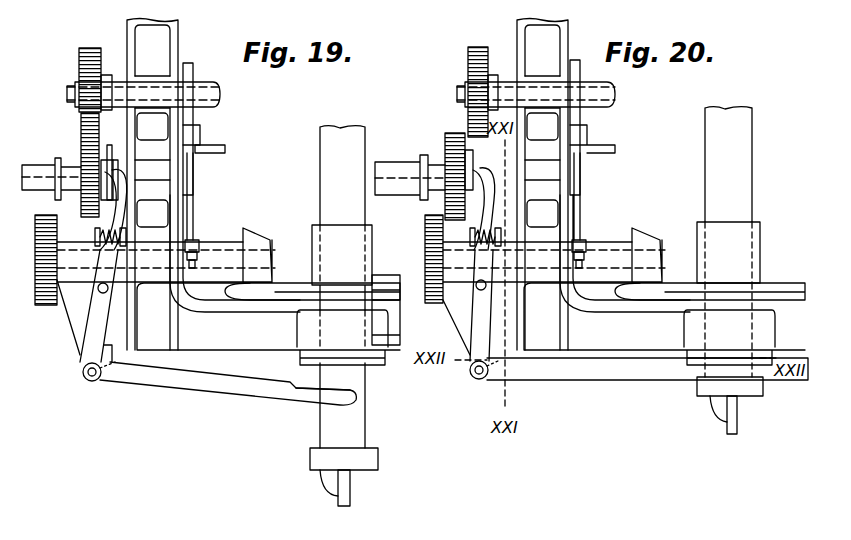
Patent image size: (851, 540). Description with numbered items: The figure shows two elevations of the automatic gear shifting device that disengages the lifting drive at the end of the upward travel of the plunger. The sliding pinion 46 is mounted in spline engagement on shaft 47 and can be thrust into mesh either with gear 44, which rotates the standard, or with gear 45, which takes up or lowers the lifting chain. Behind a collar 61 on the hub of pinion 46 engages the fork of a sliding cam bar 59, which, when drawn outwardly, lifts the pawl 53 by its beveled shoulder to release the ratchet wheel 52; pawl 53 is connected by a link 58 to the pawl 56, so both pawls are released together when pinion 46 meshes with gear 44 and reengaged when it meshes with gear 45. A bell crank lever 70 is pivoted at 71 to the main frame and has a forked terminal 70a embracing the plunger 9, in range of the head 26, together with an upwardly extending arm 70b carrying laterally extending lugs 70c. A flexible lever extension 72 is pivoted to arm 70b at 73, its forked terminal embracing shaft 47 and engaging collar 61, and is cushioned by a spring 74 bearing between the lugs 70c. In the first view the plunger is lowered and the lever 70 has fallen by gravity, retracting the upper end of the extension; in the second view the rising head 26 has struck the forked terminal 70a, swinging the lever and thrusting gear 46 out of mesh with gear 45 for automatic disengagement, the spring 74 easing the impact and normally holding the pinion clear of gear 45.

In FIG. 19, the plunger 9 is at (332, 172).
In FIG. 20, the plunger 9 is at (735, 200).
In FIG. 19, the head 26 is at (368, 457).
In FIG. 20, the head 26 is at (708, 386).
In FIG. 19, the gear 44 is at (150, 285).
In FIG. 20, the gear 44 is at (426, 237).
In FIG. 19, the gear 45 is at (88, 48).
In FIG. 20, the gear 45 is at (480, 47).
In FIG. 19, the shifting gear 46 is at (84, 152).
In FIG. 20, the shifting gear 46 is at (456, 134).
In FIG. 19, the shaft 47 is at (42, 178).
In FIG. 20, the shaft 47 is at (398, 176).
In FIG. 19, the ratchet wheel 52 is at (188, 63).
In FIG. 20, the ratchet wheel 52 is at (578, 60).
In FIG. 19, the pawl 53 is at (195, 140).
In FIG. 20, the pawl 53 is at (582, 139).
In FIG. 19, the pawl 56 is at (197, 245).
In FIG. 19, the link 58 is at (195, 186).
In FIG. 19, the sliding cam bar 59 is at (226, 149).
In FIG. 19, the collar 61 is at (116, 160).
In FIG. 19, the bell crank lever 70 is at (205, 384).
In FIG. 20, the bell crank lever 70 is at (622, 372).
In FIG. 19, the forked terminal 70a is at (340, 391).
In FIG. 19, the upwardly extending arm 70b is at (83, 371).
In FIG. 19, the lugs 70c is at (139, 237).
In FIG. 20, the lugs 70c is at (500, 232).
In FIG. 19, the pivot 71 is at (90, 381).
In FIG. 20, the pivot 71 is at (477, 380).
In FIG. 19, the flexible lever extension 72 is at (120, 196).
In FIG. 20, the flexible lever extension 72 is at (485, 200).
In FIG. 19, the pivot 73 is at (110, 290).
In FIG. 20, the pivot 73 is at (478, 289).
In FIG. 19, the spring 74 is at (122, 232).
In FIG. 20, the spring 74 is at (497, 244).